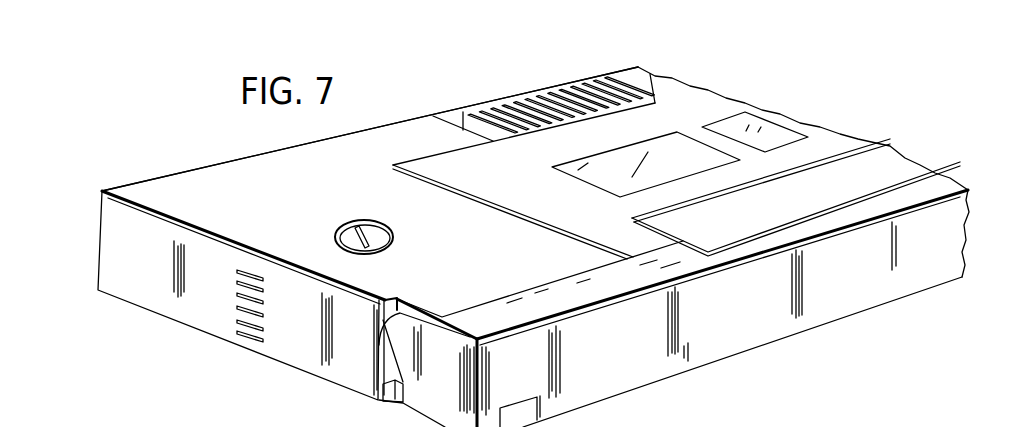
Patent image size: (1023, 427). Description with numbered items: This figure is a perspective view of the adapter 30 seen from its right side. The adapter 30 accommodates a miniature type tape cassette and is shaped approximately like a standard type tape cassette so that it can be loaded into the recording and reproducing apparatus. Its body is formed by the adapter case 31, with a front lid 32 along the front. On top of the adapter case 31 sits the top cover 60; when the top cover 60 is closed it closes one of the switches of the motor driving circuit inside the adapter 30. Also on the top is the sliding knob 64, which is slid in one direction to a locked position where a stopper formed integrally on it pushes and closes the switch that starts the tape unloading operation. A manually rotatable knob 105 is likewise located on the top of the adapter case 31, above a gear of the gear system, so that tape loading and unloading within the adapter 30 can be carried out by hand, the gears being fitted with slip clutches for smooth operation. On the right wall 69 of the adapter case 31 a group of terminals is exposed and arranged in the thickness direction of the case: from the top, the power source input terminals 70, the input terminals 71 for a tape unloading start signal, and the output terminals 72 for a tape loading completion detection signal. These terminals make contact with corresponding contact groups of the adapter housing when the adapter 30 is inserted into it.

The adapter 30 is at (410, 105).
The adapter case 31 is at (294, 156).
The front lid 32 is at (733, 342).
The top cover 60 is at (471, 186).
The sliding knob 64 is at (493, 108).
The right wall 69 is at (167, 307).
The power source input terminals 70 is at (265, 279).
The input terminals for a tape unloading start signal 71 is at (265, 302).
The output terminals for a tape loading completion detection signal 72 is at (265, 328).
The knob 105 is at (346, 230).